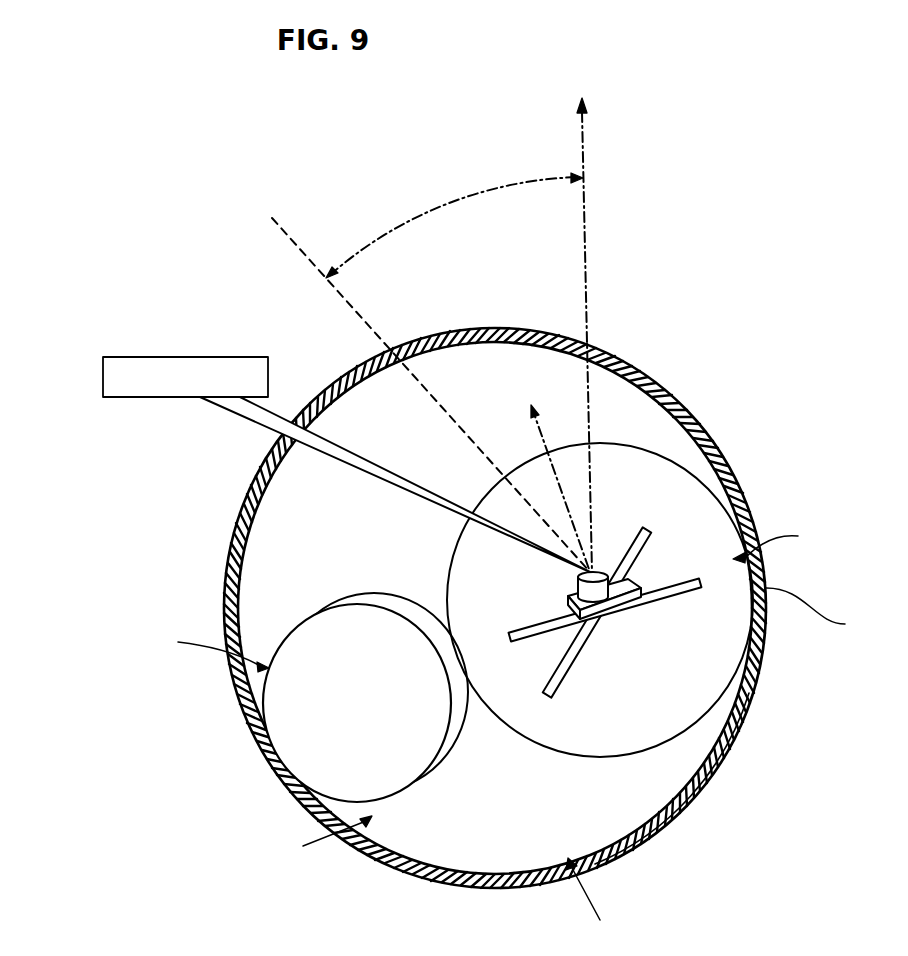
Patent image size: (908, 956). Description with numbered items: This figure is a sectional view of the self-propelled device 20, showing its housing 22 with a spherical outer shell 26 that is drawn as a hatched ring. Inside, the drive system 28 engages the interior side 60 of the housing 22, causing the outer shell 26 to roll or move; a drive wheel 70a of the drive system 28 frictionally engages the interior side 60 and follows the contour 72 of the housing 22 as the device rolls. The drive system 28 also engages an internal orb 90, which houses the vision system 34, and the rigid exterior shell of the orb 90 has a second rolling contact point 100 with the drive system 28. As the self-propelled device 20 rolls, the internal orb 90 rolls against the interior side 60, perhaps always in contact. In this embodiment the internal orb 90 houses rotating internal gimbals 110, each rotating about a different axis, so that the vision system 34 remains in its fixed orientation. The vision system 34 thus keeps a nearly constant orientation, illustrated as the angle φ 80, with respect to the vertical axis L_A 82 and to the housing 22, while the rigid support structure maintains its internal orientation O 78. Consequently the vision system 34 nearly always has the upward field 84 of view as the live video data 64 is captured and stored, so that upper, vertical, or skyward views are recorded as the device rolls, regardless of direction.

The self-propelled device 20 is at (700, 418).
The housing 22 is at (733, 464).
The outer shell 26 is at (690, 811).
The drive system 28 is at (206, 649).
The vision system 34 is at (563, 601).
The interior side 60 is at (323, 839).
The live video data 64 is at (103, 372).
The drive wheel 70a is at (407, 790).
The contour 72 is at (591, 901).
The internal orientation O 78 is at (530, 404).
The angle φ 80 is at (579, 489).
The vertical axis L_A 82 is at (618, 125).
The upward field of view 84 is at (378, 218).
The internal orb 90 is at (822, 611).
The second rolling contact point 100 is at (785, 542).
The internal gimbals 110 is at (620, 620).